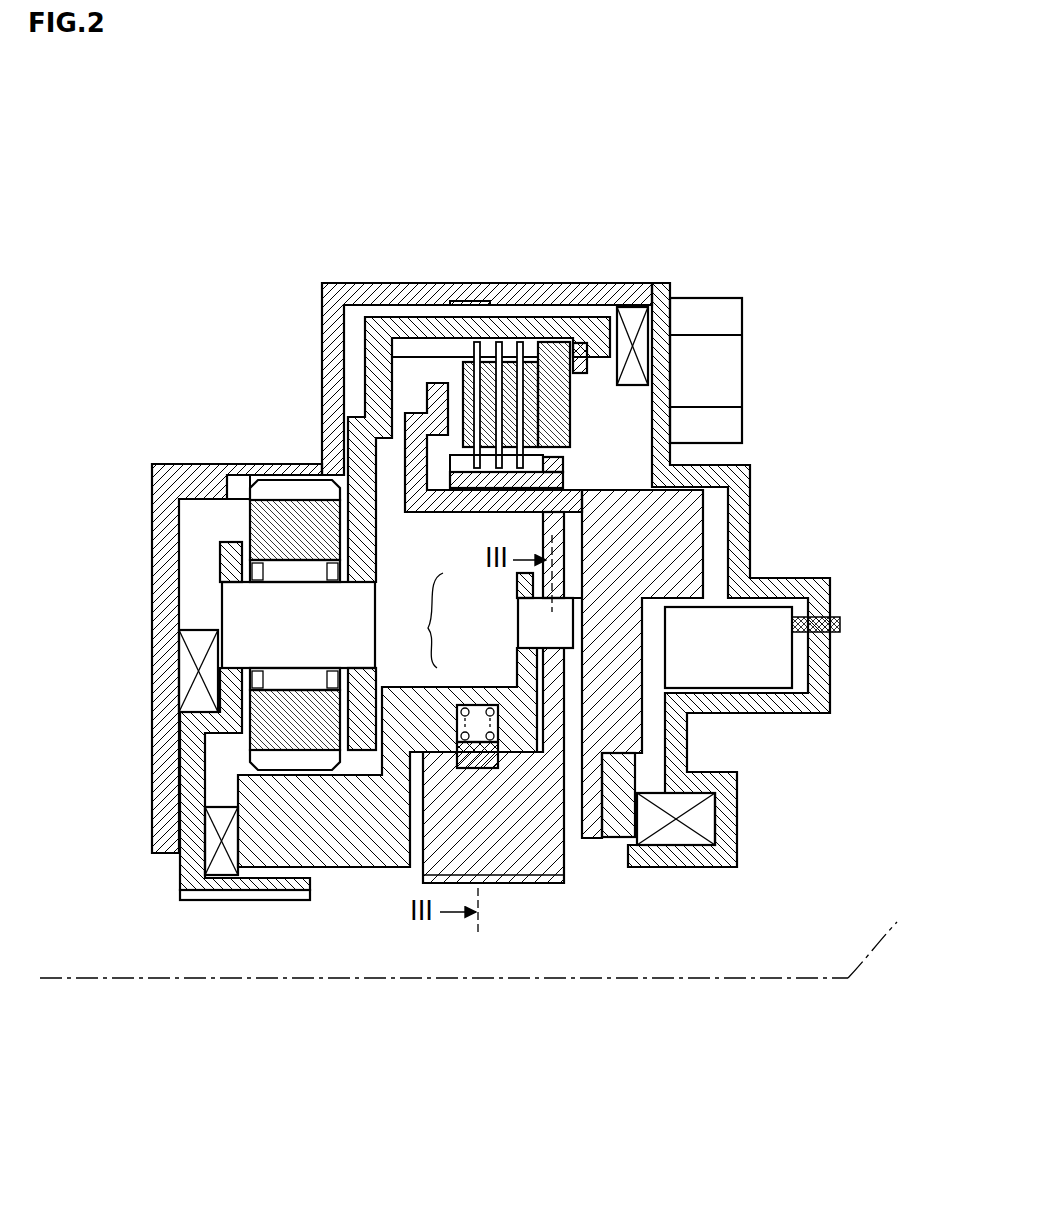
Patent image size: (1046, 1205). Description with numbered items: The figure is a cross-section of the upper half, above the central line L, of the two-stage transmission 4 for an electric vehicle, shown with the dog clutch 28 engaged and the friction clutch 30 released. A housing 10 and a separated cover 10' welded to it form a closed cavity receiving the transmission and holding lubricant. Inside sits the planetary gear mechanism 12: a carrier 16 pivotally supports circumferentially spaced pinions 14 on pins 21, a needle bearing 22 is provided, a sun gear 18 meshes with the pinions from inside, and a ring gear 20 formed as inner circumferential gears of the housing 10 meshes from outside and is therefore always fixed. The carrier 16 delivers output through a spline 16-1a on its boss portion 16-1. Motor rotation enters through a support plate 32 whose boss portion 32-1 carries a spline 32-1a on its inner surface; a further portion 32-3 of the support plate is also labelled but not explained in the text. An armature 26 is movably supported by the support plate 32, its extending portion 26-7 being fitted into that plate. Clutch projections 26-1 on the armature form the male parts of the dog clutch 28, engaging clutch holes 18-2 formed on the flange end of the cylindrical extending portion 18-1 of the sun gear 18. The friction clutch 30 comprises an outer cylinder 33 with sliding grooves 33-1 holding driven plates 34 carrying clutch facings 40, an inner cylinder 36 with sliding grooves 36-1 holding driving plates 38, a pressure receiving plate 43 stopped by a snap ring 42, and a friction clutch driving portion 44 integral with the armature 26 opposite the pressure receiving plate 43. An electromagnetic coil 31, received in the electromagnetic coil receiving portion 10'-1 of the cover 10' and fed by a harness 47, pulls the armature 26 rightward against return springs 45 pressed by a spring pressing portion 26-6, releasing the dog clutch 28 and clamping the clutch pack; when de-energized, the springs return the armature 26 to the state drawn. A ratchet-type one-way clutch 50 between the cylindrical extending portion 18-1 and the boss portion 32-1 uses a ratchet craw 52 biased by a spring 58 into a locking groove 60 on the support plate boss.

The two-stage transmission 4 is at (292, 383).
The housing 10 is at (453, 349).
The cover 10' is at (731, 575).
The electromagnetic coil receiving portion 10'-1 is at (760, 757).
The planetary gear mechanism 12 is at (178, 397).
The pinions 14 is at (215, 705).
The carrier 16 is at (352, 520).
The boss portion 16-1 is at (213, 880).
The spline 16-1a is at (262, 900).
The sun gear 18 is at (280, 805).
The cylindrical extending portion 18-1 is at (443, 727).
The clutch holes 18-2 is at (522, 633).
The ring gear 20 is at (238, 482).
The pins 21 is at (260, 615).
The needle bearing 22 is at (283, 576).
The armature 26 is at (690, 505).
The clutch projections 26-1 is at (540, 614).
The spring pressing portion 26-6 is at (617, 810).
The extending portion 26-7 is at (713, 465).
The dog clutch 28 is at (420, 602).
The multi-plate friction clutch 30 is at (740, 222).
The electromagnetic coil 31 is at (758, 628).
The support plate 32 is at (548, 532).
The boss portion 32-1 is at (533, 830).
The spline 32-1a is at (540, 858).
The opening 32-3 is at (580, 633).
The outer cylinder 33 is at (497, 355).
The sliding grooves 33-1 is at (457, 343).
The driven plates 34 is at (521, 390).
The inner cylinder 36 is at (586, 473).
The sliding grooves 36-1 is at (590, 445).
The driving plates 38 is at (557, 397).
The clutch facings 40 is at (575, 425).
The snap ring 42 is at (582, 348).
The pressure receiving plate 43 is at (632, 350).
The friction clutch driving portion 44 is at (445, 353).
The return springs 45 is at (688, 840).
The harness 47 is at (818, 698).
The ratchet-type one-way clutch 50 is at (622, 1015).
The ratchet craw 52 is at (478, 762).
The spring 58 is at (490, 740).
The locking groove 60 is at (470, 745).
The central line L is at (480, 943).